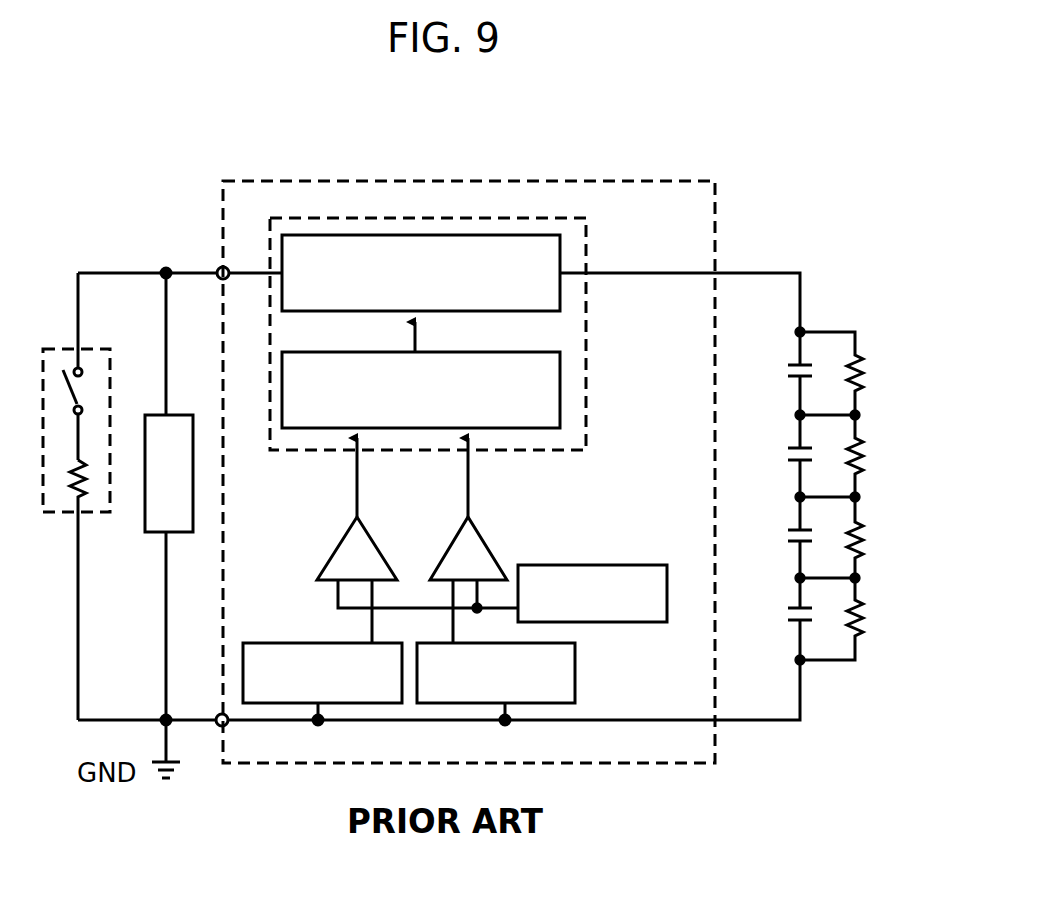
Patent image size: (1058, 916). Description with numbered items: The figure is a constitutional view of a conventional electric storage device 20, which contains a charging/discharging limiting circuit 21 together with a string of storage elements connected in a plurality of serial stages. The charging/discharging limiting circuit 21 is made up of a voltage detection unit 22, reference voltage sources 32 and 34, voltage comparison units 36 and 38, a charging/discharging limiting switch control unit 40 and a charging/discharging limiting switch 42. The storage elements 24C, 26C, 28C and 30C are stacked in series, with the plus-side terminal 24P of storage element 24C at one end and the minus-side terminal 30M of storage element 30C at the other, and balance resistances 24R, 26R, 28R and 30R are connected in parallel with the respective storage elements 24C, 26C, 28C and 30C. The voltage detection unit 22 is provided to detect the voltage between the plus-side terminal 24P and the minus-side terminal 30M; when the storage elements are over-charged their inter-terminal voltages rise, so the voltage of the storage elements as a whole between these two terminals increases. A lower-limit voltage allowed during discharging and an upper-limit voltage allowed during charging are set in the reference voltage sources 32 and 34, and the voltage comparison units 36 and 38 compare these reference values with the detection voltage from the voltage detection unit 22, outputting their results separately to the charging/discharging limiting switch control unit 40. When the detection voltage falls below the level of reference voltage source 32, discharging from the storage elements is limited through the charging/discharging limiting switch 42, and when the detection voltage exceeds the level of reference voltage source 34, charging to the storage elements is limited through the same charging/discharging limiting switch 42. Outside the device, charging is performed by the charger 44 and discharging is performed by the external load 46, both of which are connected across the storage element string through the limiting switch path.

The electric storage device 20 is at (685, 146).
The charging/discharging limiting circuit 21 is at (512, 178).
The voltage detection unit 22 is at (598, 565).
The plus-side terminal 24P is at (803, 329).
The storage element 24C is at (785, 368).
The storage element 26C is at (785, 452).
The storage element 28C is at (785, 535).
The storage element 30C is at (785, 615).
The balance resistance 24R is at (870, 370).
The balance resistance 26R is at (870, 453).
The balance resistance 28R is at (870, 537).
The balance resistance 30R is at (870, 617).
The minus-side terminal 30M is at (803, 663).
The reference voltage source 32 is at (575, 683).
The reference voltage source 34 is at (273, 638).
The voltage comparison unit 36 is at (485, 545).
The voltage comparison unit 38 is at (335, 547).
The charging/discharging limiting switch control unit 40 is at (562, 386).
The charging/discharging limiting switch 42 is at (562, 267).
The charger 44 is at (153, 535).
The external load 46 is at (65, 348).